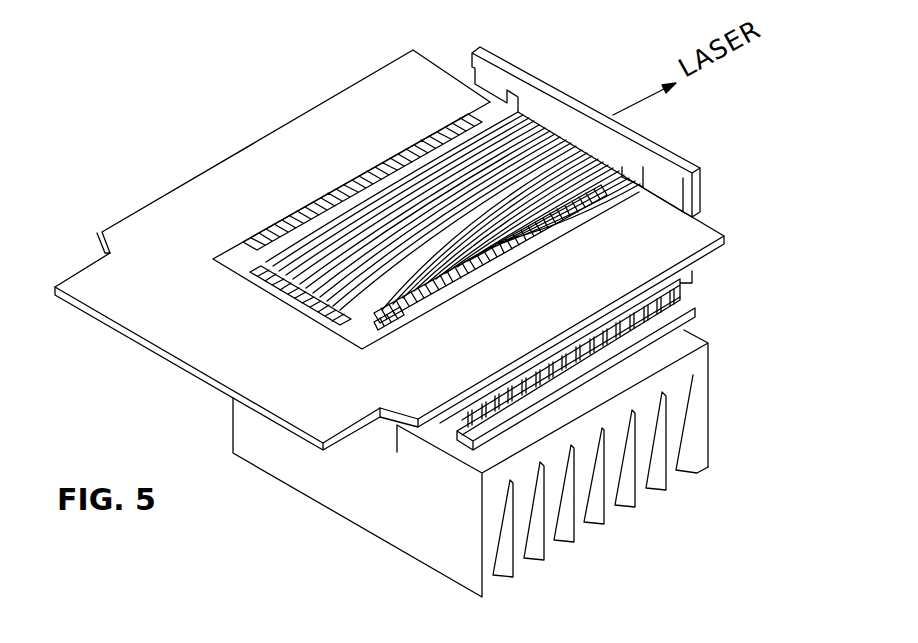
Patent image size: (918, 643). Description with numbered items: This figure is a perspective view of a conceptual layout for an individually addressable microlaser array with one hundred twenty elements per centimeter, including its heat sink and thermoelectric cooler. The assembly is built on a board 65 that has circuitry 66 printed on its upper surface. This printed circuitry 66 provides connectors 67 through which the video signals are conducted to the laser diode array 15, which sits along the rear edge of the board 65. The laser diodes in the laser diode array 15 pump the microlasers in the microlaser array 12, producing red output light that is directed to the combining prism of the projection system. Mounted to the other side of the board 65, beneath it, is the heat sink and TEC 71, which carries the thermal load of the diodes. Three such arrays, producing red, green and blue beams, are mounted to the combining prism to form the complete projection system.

The printed circuit board 65 is at (162, 207).
The optical waveguide substrate 66 is at (377, 143).
The contact pads 67 is at (323, 198).
The laser bar 15 is at (545, 118).
The laser diode 12 is at (645, 180).
The heat sink 71 is at (707, 322).